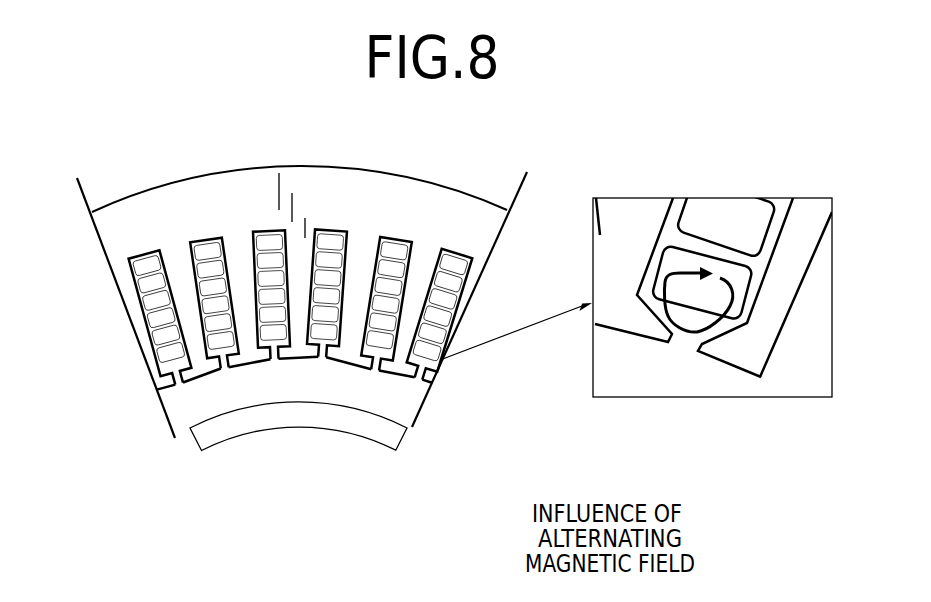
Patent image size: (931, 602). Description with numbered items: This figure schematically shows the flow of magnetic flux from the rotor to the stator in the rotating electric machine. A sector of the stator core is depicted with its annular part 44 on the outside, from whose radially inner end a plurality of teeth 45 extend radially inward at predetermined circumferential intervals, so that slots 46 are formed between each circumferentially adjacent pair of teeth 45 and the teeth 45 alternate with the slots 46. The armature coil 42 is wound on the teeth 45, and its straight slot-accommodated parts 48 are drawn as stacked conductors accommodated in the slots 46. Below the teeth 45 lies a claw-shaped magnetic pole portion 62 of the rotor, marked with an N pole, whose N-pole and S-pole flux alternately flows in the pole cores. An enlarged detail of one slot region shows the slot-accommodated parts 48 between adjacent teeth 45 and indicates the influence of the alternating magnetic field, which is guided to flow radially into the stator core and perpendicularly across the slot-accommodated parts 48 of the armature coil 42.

The armature coil 42 is at (405, 279).
The annular part 44 is at (395, 193).
The teeth 45 is at (202, 355).
The slots 46 is at (263, 340).
The slot-accommodated parts 48 is at (162, 327).
The claw-shaped magnetic pole portions 62 is at (373, 433).